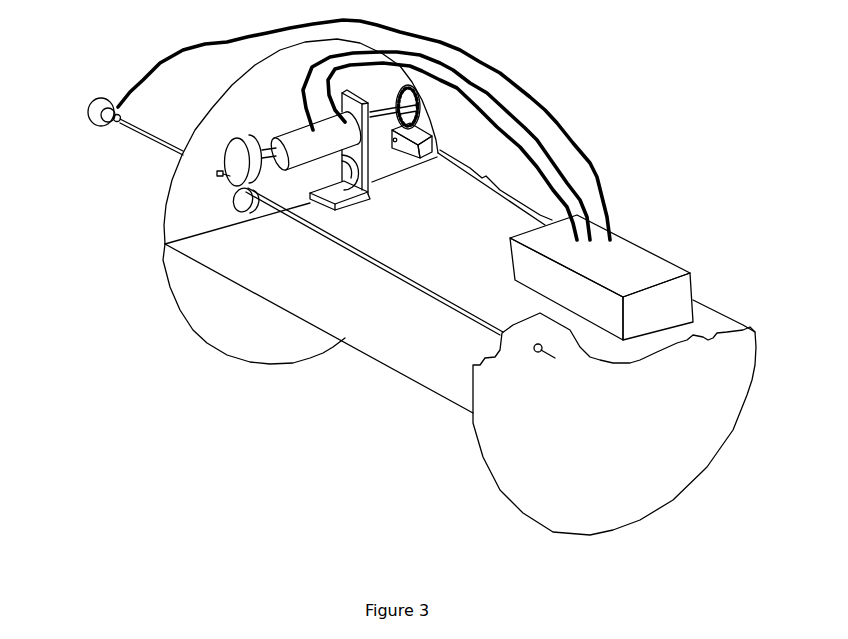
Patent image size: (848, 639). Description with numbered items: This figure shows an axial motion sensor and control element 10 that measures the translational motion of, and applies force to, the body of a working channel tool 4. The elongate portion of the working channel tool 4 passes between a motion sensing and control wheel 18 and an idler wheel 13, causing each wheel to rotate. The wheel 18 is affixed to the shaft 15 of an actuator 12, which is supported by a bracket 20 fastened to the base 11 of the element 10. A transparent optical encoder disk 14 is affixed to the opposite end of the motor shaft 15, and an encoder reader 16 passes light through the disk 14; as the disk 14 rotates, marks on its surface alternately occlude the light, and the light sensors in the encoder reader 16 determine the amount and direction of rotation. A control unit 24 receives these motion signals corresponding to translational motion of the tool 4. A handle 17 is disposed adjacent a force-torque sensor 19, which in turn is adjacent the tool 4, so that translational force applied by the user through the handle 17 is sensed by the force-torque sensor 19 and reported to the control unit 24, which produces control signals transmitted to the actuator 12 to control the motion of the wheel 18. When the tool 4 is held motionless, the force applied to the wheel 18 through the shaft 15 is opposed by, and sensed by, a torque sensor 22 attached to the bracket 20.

The working channel tool 4 is at (157, 133).
The sensor and control element 10 is at (670, 517).
The base 11 is at (205, 347).
The actuator 12 is at (292, 124).
The idler wheel 13 is at (238, 216).
The transparent optical encoder disk 14 is at (435, 117).
The shaft 15 is at (262, 147).
The encoder reader 16 is at (430, 165).
The handle 17 is at (99, 99).
The motion sensing and control wheel 18 is at (237, 134).
The force-torque sensor 19 is at (111, 131).
The bracket 20 is at (360, 210).
The torque sensor 22 is at (340, 175).
The control unit 24 is at (650, 248).